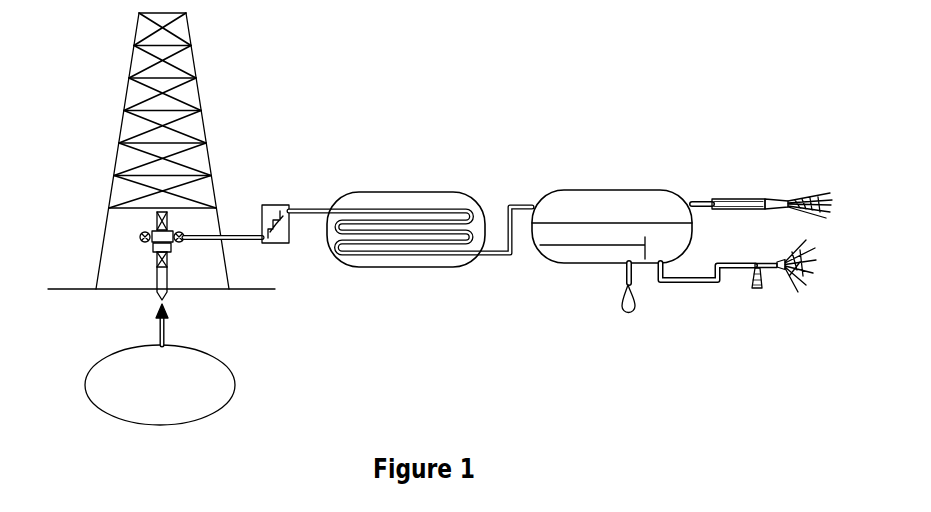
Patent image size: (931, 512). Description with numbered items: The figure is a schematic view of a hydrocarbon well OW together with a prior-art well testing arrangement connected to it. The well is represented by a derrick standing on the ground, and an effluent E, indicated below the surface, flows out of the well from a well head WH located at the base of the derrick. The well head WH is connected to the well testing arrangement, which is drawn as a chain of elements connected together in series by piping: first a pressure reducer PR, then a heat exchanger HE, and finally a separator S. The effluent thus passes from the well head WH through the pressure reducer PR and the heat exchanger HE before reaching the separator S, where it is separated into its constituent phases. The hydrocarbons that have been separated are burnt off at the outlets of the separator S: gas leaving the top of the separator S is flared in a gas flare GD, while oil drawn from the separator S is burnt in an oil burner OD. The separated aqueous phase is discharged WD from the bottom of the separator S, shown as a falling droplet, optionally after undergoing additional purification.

The hydrocarbon well OW is at (124, 82).
The well head WH is at (138, 264).
The effluent E is at (166, 394).
The pressure reducer PR is at (277, 196).
The heat exchanger HE is at (399, 183).
The separator S is at (600, 183).
The gas flare GD is at (740, 189).
The aqueous phase discharge WD is at (609, 299).
The oil burner OD is at (756, 300).